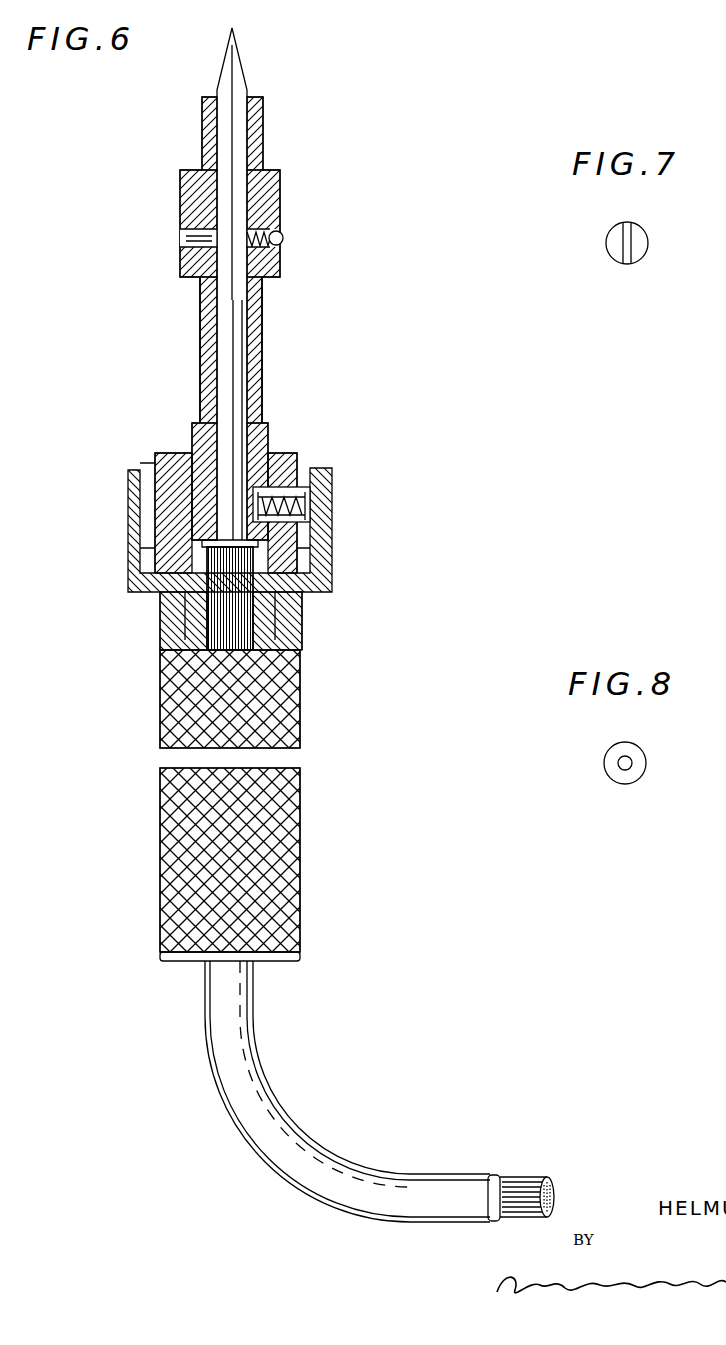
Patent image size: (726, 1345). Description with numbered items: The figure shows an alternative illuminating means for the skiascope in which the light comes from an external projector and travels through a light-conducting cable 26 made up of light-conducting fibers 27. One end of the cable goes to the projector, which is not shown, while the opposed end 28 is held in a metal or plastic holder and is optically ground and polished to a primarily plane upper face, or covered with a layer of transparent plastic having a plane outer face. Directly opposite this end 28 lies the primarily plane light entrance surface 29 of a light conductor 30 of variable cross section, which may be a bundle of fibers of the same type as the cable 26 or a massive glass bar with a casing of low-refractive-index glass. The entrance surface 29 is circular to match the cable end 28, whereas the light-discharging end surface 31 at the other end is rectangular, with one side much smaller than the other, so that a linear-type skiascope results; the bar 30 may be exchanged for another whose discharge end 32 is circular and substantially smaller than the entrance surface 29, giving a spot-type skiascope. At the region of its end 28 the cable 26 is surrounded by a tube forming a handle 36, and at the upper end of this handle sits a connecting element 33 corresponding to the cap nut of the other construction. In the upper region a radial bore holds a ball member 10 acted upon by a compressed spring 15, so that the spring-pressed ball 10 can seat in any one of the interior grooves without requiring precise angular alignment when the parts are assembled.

In FIG. 6, the ball member 10 is at (284, 238).
In FIG. 6, the compressed spring 15 is at (268, 248).
In FIG. 6, the light-conducting cable 26 is at (217, 1043).
In FIG. 6, the light-conducting fibers 27 is at (545, 1177).
In FIG. 6, the cable end 28 is at (247, 538).
In FIG. 6, the light entrance surface 29 is at (205, 553).
In FIG. 6, the light conductor of variable cross section 30 is at (236, 350).
In FIG. 6, the rectangular light-discharging end surface 31 is at (234, 30).
In FIG. 7, the rectangular light-discharging end surface 31 is at (625, 264).
In FIG. 8, the circular discharge end surface 32 is at (622, 784).
In FIG. 6, the connecting element 33 is at (128, 524).
In FIG. 6, the handle 36 is at (293, 824).